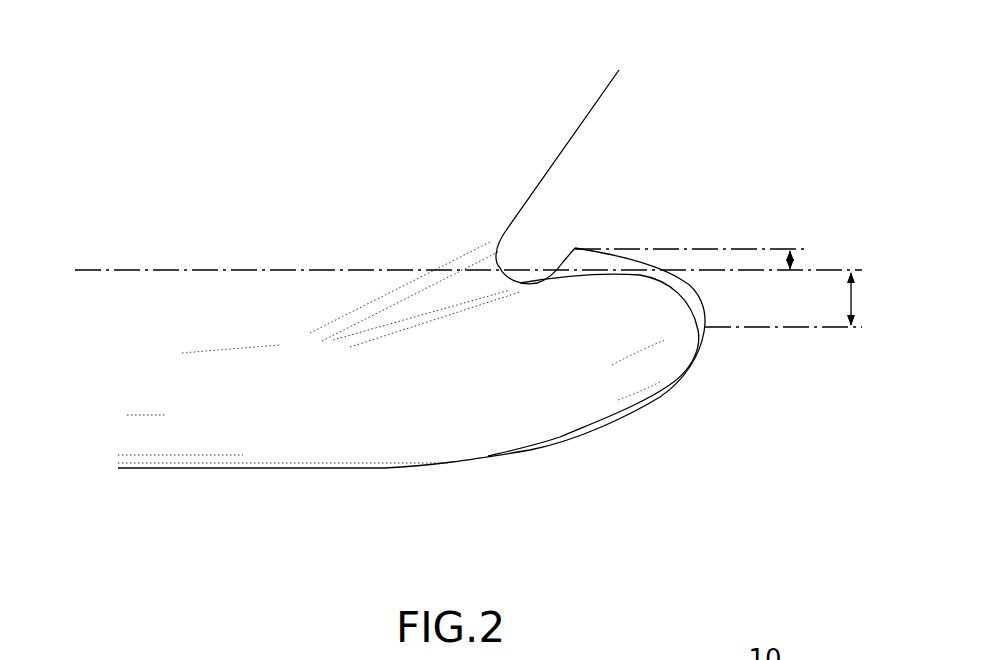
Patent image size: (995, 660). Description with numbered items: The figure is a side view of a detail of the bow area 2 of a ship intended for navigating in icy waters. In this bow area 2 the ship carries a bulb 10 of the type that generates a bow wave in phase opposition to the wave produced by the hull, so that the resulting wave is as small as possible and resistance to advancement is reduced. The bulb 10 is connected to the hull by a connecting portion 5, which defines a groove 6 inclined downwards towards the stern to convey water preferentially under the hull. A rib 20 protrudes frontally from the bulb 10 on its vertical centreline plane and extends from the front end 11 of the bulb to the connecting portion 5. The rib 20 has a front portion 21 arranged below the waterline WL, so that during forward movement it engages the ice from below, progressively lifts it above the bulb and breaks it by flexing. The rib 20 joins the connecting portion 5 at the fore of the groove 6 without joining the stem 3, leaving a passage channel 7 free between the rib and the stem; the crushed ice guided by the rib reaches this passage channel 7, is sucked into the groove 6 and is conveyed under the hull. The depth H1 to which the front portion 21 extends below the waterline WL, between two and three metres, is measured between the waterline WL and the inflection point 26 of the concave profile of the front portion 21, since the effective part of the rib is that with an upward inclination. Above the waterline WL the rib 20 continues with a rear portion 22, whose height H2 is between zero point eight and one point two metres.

The bow area 2 is at (686, 156).
The stem 3 is at (612, 88).
The connecting portion 5 is at (420, 348).
The groove 6 is at (426, 290).
The passage channel 7 is at (534, 237).
The bulb 10 is at (598, 443).
The front end 11 is at (643, 337).
The rib 20 is at (660, 246).
The front portion 21 is at (698, 347).
The rear portion 22 is at (592, 260).
The inflection point 26 is at (705, 328).
The waterline WL is at (91, 270).
The depth H1 is at (798, 300).
The height H2 is at (792, 260).